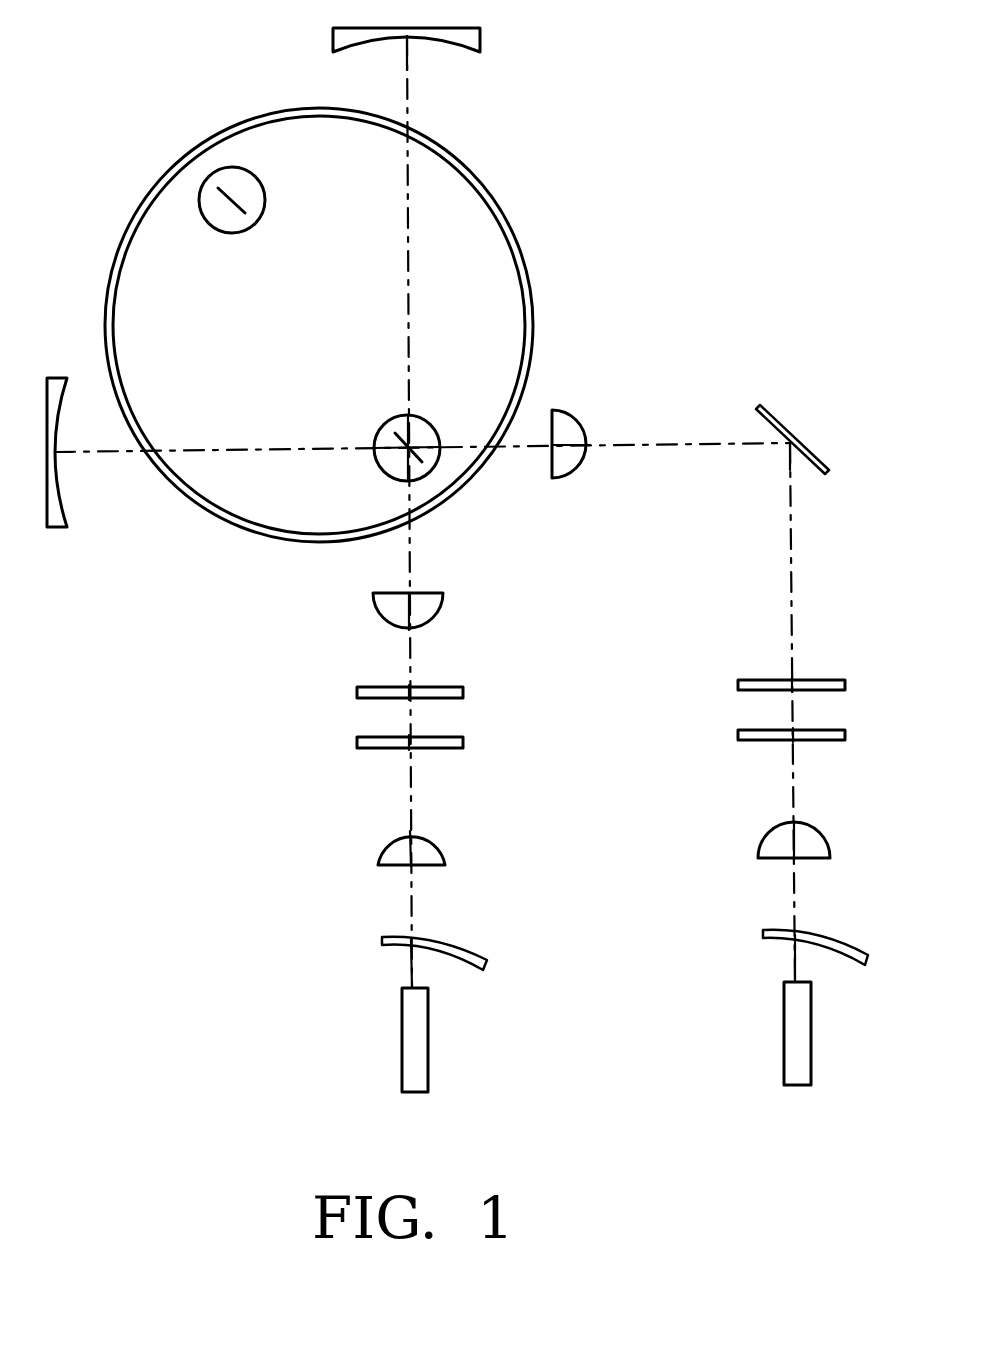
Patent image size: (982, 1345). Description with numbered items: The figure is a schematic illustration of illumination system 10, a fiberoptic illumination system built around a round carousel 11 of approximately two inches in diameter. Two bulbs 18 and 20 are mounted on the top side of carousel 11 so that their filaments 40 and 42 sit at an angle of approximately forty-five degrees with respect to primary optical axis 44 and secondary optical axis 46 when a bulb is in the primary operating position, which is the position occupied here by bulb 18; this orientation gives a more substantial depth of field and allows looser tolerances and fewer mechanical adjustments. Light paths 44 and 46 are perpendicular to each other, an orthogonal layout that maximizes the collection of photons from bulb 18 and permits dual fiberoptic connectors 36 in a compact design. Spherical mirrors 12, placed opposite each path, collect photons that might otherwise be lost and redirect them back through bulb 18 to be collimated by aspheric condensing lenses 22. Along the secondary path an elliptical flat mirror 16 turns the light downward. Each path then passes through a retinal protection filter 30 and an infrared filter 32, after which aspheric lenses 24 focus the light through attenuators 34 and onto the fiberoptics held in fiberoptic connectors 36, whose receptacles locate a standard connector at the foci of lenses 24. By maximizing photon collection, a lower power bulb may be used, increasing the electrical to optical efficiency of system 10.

The illumination system 10 is at (152, 67).
The carousel 11 is at (521, 243).
The spherical mirror 12 is at (458, 28).
The mirror 16 is at (787, 427).
The bulb 18 is at (425, 420).
The bulb 20 is at (265, 182).
The aspheric condensing lens 22 is at (580, 418).
The aspheric lens 24 is at (385, 842).
The retinal protection filter 30 is at (357, 692).
The infrared filter 32 is at (357, 742).
The attenuator 34 is at (393, 935).
The fiberoptic connector 36 is at (402, 1033).
The filament 40 is at (233, 210).
The filament 42 is at (377, 443).
The primary optical axis 44 is at (408, 98).
The secondary optical axis 46 is at (683, 447).